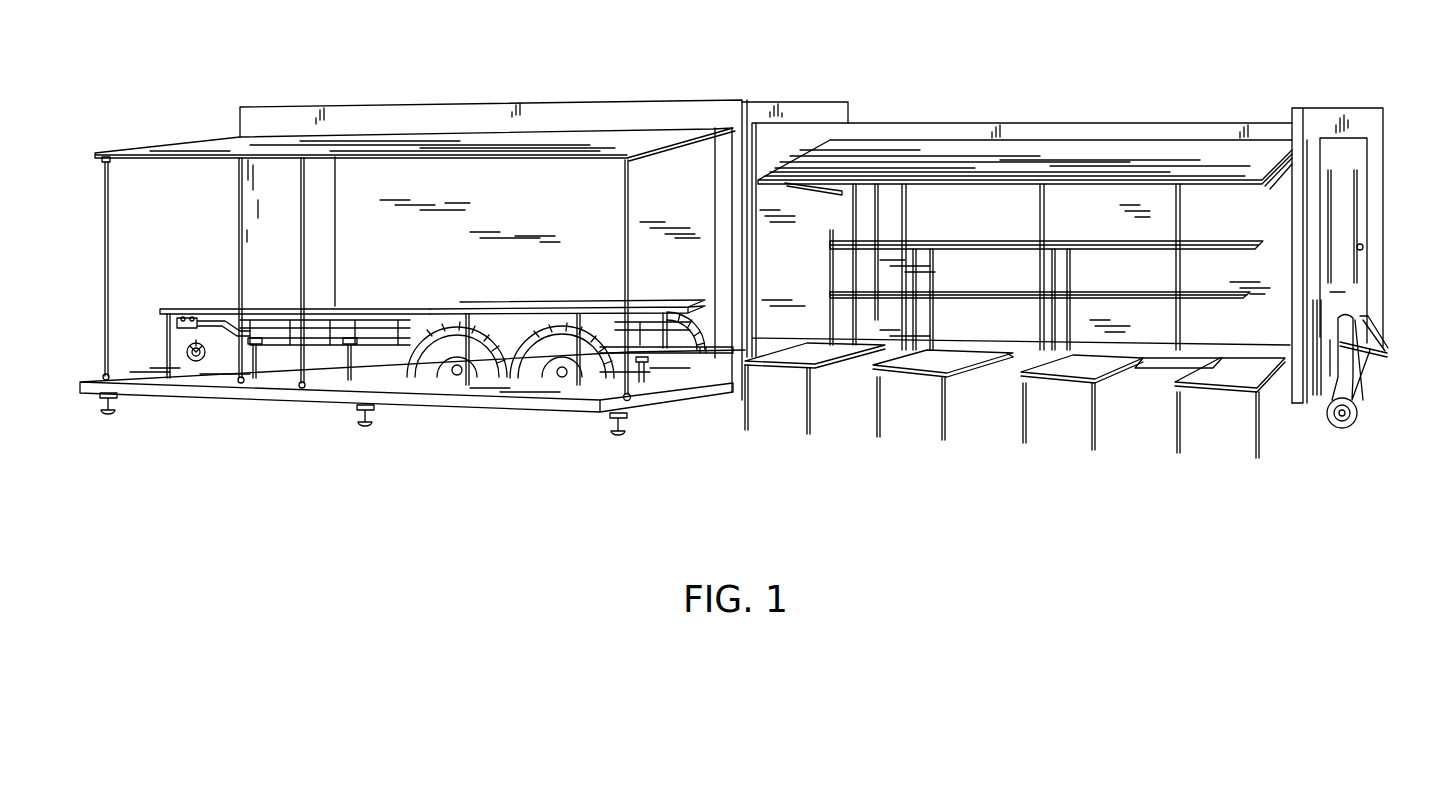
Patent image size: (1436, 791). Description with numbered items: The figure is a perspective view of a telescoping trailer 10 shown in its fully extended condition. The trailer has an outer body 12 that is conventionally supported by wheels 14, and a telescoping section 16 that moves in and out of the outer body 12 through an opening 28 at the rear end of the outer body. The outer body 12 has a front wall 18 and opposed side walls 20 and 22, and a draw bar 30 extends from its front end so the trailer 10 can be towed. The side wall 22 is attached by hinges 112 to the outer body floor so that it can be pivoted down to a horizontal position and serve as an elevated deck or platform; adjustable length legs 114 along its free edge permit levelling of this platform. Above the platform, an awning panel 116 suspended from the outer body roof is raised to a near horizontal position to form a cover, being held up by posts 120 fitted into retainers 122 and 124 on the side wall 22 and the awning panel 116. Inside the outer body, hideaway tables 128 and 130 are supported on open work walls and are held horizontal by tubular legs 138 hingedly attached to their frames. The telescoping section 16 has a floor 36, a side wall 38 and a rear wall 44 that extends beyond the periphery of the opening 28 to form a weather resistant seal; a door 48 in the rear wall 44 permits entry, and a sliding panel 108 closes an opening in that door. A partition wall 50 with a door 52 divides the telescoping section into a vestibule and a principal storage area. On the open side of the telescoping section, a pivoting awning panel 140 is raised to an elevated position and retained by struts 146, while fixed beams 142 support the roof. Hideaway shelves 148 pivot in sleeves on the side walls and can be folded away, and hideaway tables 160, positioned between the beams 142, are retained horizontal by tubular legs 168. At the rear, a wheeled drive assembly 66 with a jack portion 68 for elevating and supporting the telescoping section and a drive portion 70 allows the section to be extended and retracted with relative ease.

The telescoping trailer 10 is at (963, 47).
The outer body 12 is at (291, 107).
The wheels 14 is at (490, 378).
The telescoping section 16 is at (957, 124).
The front wall 18 is at (258, 196).
The side wall 20 is at (450, 238).
The side wall 22 is at (236, 400).
The opening 28 is at (798, 121).
The draw bar 30 is at (185, 317).
The floor 36 is at (1157, 366).
The side wall 38 is at (1088, 232).
The rear wall 44 is at (1374, 125).
The door 48 is at (1353, 155).
The partition wall 50 is at (843, 217).
The door 52 is at (860, 258).
The wheeled drive assembly 66 is at (1386, 326).
The jack portion 68 is at (1340, 378).
The drive portion 70 is at (1370, 373).
The sliding panel 108 is at (1344, 292).
The hinges 112 is at (270, 353).
The adjustable length legs 114 is at (113, 411).
The awning panel 116 is at (202, 142).
The posts 120 is at (111, 252).
The retainer 122 is at (103, 375).
The retainer 124 is at (104, 160).
The hideaway table 128 is at (455, 298).
The hideaway table 130 is at (416, 308).
The tubular legs 138 is at (166, 345).
The awning panel 140 is at (1095, 152).
The fixed beams 142 is at (903, 218).
The struts 146 is at (818, 192).
The hideaway shelves 148 is at (1088, 258).
The hideaway tables 160 is at (824, 384).
The tubular legs 168 is at (1030, 432).